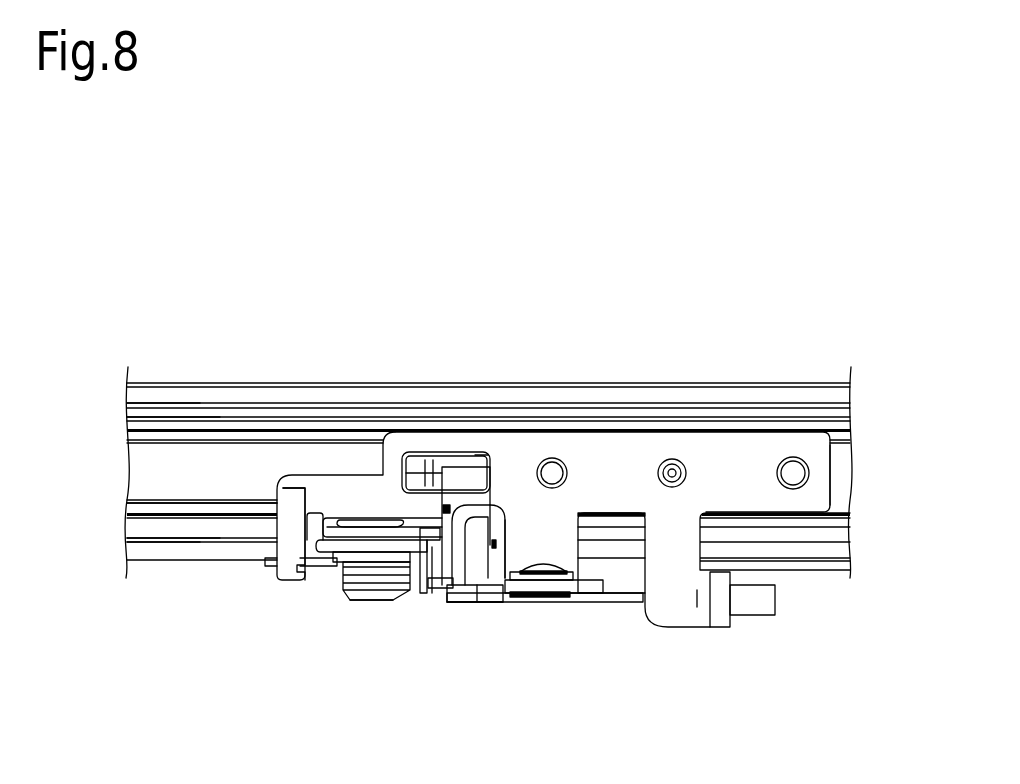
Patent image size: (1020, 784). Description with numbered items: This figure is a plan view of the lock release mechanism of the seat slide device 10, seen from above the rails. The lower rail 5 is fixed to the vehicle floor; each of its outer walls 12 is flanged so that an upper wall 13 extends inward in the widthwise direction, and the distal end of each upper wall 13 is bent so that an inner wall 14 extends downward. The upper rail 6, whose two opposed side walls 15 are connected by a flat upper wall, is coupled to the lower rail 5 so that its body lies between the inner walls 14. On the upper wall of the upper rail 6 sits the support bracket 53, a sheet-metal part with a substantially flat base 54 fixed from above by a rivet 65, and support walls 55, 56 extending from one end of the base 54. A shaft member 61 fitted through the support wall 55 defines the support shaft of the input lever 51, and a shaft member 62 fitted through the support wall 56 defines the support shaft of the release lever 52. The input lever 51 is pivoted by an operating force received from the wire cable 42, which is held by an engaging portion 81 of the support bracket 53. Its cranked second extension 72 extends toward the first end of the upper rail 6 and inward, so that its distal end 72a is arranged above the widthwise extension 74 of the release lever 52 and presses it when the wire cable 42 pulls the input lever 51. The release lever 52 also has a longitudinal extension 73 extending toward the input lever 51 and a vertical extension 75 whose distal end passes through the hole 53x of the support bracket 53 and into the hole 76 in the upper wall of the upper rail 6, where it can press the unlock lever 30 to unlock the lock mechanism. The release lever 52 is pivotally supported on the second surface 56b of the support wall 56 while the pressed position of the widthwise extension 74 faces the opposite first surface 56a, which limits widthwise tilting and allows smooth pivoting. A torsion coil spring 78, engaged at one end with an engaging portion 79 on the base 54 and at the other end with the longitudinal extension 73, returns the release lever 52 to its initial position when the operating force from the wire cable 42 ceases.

The seat slide device 10 is at (135, 272).
The lower rail 5 is at (266, 385).
The upper rail 6 is at (135, 472).
The outer wall 12 is at (231, 565).
The upper wall 13 is at (135, 408).
The inner wall 14 is at (165, 500).
The side wall 15 is at (199, 420).
The unlock lever 30 is at (440, 470).
The wire cable 42 is at (627, 602).
The input lever 51 is at (583, 598).
The release lever 52 is at (418, 582).
The support bracket 53 is at (832, 471).
The hole 53x is at (470, 453).
The base 54 is at (620, 448).
The support wall 55 is at (577, 570).
The support wall 56 is at (303, 520).
The first surface 56a is at (341, 538).
The second surface 56b is at (336, 566).
The shaft member 61 is at (530, 602).
The shaft member 62 is at (368, 602).
The rivet 65 is at (688, 473).
The second extension 72 is at (465, 600).
The distal end 72a is at (443, 508).
The longitudinal extension 73 is at (500, 548).
The widthwise extension 74 is at (490, 498).
The vertical extension 75 is at (495, 467).
The hole 76 is at (403, 450).
The torsion coil spring 78 is at (364, 594).
The engaging portion 79 is at (283, 580).
The engaging portion 81 is at (688, 628).